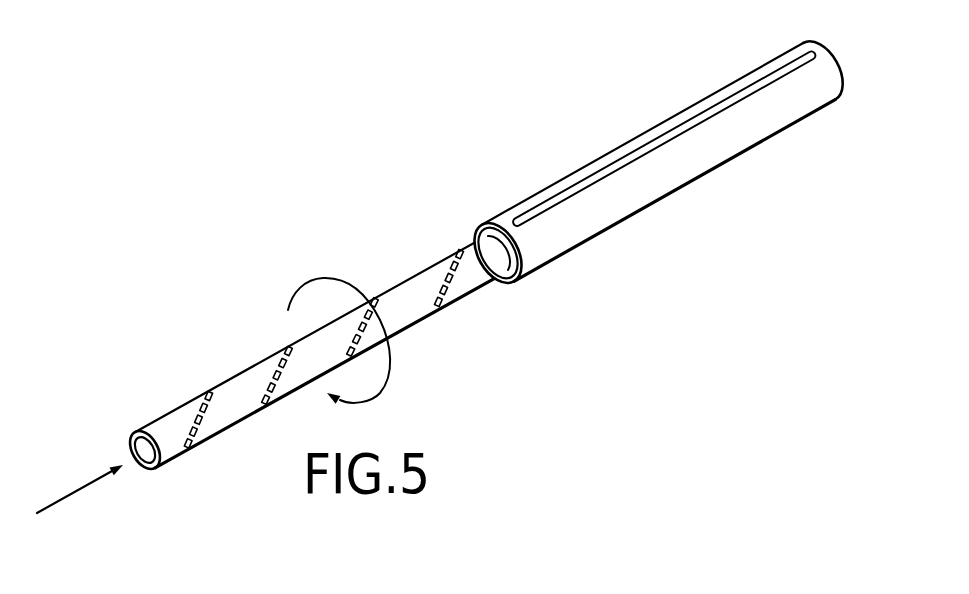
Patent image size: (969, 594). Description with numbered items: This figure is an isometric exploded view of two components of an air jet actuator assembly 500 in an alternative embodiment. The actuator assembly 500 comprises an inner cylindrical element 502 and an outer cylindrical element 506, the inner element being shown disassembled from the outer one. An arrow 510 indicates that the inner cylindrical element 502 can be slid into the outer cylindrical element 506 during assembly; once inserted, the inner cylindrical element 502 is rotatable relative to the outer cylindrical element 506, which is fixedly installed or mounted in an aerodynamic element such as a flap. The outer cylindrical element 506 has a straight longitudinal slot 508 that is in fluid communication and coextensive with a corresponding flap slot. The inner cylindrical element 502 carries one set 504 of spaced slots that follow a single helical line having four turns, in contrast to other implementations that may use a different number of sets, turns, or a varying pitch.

The actuator assembly 500 is at (196, 314).
The inner cylindrical element 502 is at (452, 257).
The set of spaced slots 504 is at (178, 410).
The outer cylindrical element 506 is at (612, 152).
The straight longitudinal slot 508 is at (690, 122).
The arrow 510 is at (52, 505).